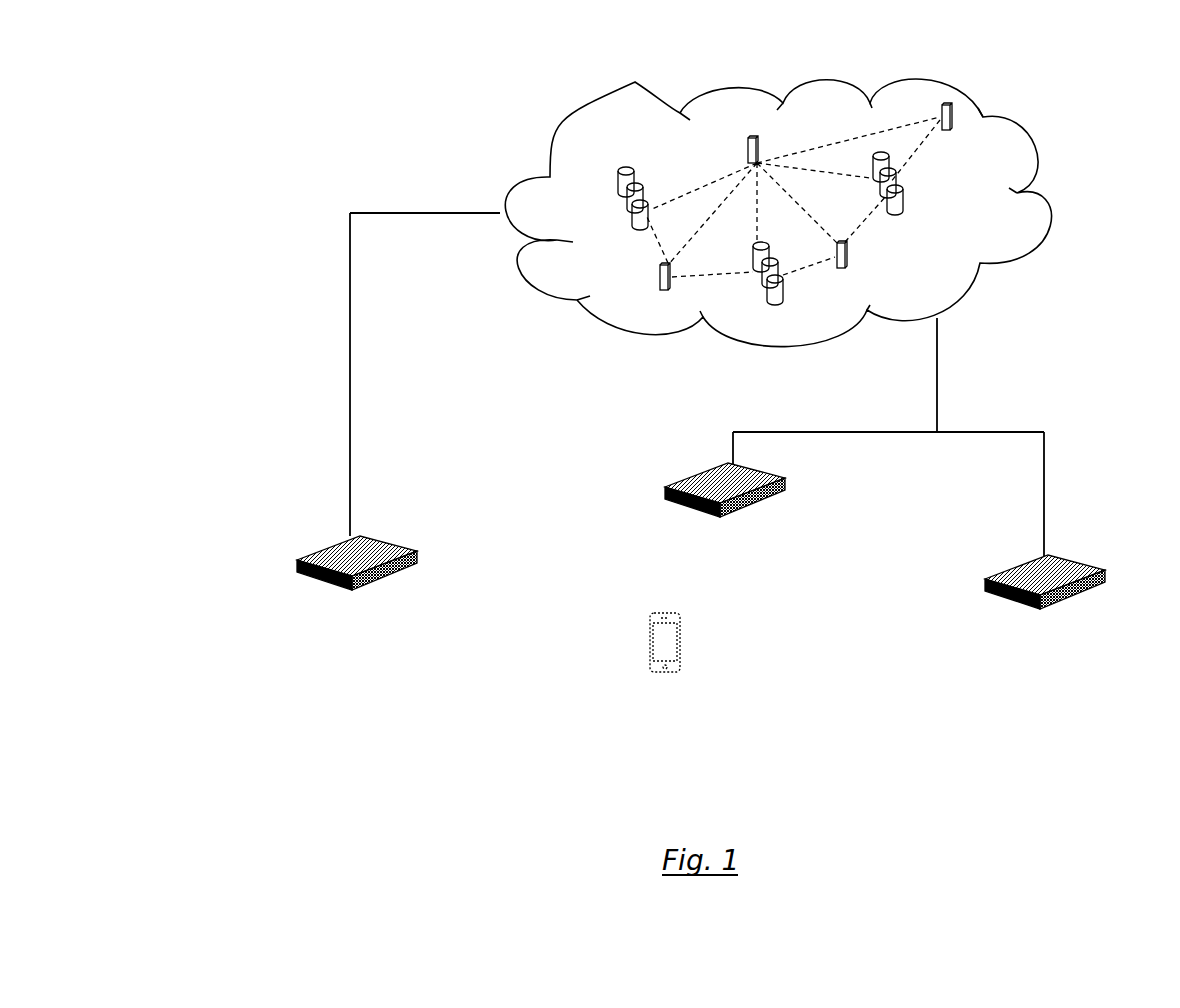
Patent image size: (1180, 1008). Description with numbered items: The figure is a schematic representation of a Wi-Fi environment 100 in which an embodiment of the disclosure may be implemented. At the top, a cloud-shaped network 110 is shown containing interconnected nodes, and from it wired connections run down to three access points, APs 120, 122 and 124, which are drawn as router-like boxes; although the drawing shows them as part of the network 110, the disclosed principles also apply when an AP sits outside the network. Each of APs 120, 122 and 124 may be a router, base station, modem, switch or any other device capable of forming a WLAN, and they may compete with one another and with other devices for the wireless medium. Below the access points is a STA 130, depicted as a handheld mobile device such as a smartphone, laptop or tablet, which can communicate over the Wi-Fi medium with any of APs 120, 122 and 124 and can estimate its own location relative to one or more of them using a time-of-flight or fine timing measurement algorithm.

The Wi-Fi environment 100 is at (242, 130).
The network 110 is at (1052, 220).
The access point (AP) 120 is at (672, 463).
The access point (AP) 122 is at (325, 541).
The access point (AP) 124 is at (1060, 555).
The STA 130 is at (651, 668).